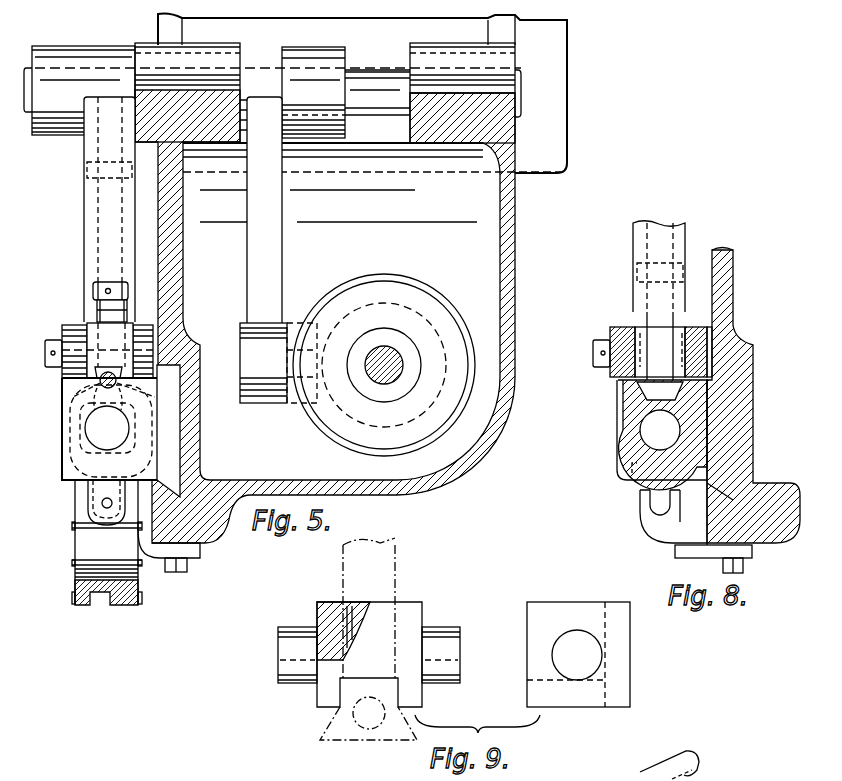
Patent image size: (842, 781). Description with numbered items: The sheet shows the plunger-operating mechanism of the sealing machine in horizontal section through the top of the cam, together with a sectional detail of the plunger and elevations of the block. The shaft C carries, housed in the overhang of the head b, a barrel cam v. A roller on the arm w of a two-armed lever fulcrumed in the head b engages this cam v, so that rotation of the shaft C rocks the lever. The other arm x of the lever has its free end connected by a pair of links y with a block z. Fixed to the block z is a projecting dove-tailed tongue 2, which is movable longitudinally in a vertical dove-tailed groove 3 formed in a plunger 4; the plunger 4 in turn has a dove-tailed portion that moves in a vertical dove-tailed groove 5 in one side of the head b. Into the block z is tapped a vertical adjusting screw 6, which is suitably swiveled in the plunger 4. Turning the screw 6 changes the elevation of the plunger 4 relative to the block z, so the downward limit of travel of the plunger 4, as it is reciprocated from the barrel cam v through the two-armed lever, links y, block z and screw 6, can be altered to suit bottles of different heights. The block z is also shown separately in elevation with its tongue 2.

In FIG. 5, the arm x is at (86, 228).
In FIG. 8, the arm x is at (637, 290).
In FIG. 5, the links y is at (143, 331).
In FIG. 8, the links y is at (685, 329).
In FIG. 5, the block z is at (88, 338).
In FIG. 9, the block z is at (417, 612).
In FIG. 5, the arm w is at (283, 249).
In FIG. 5, the barrel cam v is at (437, 308).
In FIG. 5, the shaft C is at (400, 366).
In FIG. 5, the head b is at (515, 402).
In FIG. 8, the head b is at (745, 348).
In FIG. 5, the dove-tailed tongue 2 is at (93, 383).
In FIG. 9, the dove-tailed tongue 2 is at (343, 740).
In FIG. 5, the dove-tailed groove 3 is at (65, 410).
In FIG. 8, the dove-tailed groove 3 is at (618, 395).
In FIG. 5, the plunger 4 is at (68, 466).
In FIG. 8, the plunger 4 is at (628, 450).
In FIG. 5, the dove-tailed groove 5 is at (182, 458).
In FIG. 8, the dove-tailed groove 5 is at (735, 424).
In FIG. 5, the adjusting screw 6 is at (125, 384).